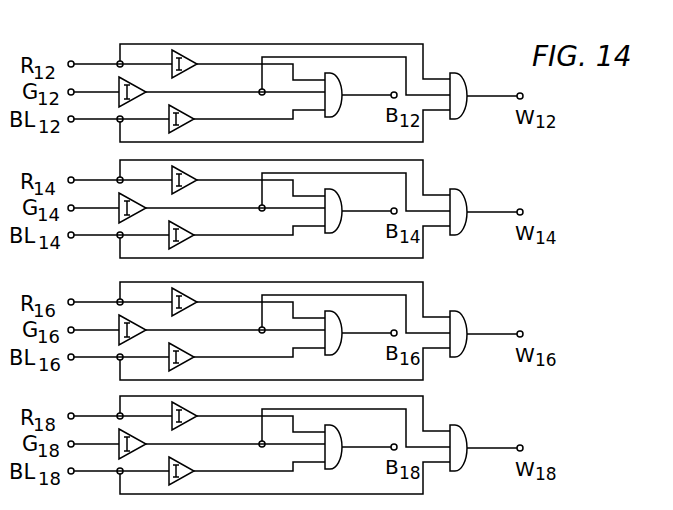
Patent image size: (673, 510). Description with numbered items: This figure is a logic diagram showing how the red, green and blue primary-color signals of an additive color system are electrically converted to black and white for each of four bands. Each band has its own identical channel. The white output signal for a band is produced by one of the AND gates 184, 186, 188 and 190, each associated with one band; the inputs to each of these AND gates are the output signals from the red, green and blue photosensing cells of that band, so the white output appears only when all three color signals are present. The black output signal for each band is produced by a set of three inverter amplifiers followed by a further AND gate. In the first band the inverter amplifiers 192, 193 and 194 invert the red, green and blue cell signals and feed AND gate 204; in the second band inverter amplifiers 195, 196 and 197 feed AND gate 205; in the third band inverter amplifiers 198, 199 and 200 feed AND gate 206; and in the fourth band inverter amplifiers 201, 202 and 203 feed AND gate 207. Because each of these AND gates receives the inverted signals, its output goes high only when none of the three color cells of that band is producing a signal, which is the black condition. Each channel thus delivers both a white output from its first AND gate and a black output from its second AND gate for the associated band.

The AND gate 184 is at (466, 66).
The AND gate 186 is at (466, 182).
The AND gate 188 is at (466, 303).
The AND gate 190 is at (466, 418).
The inverter amplifier 192 is at (188, 66).
The inverter amplifier 193 is at (118, 88).
The inverter amplifier 194 is at (191, 113).
The inverter amplifier 195 is at (188, 181).
The inverter amplifier 196 is at (118, 203).
The inverter amplifier 197 is at (191, 230).
The inverter amplifier 198 is at (196, 290).
The inverter amplifier 199 is at (118, 325).
The inverter amplifier 200 is at (191, 352).
The inverter amplifier 201 is at (188, 420).
The inverter amplifier 202 is at (118, 438).
The inverter amplifier 203 is at (188, 464).
The AND gate 204 is at (343, 85).
The AND gate 205 is at (343, 202).
The AND gate 206 is at (343, 323).
The AND gate 207 is at (343, 437).